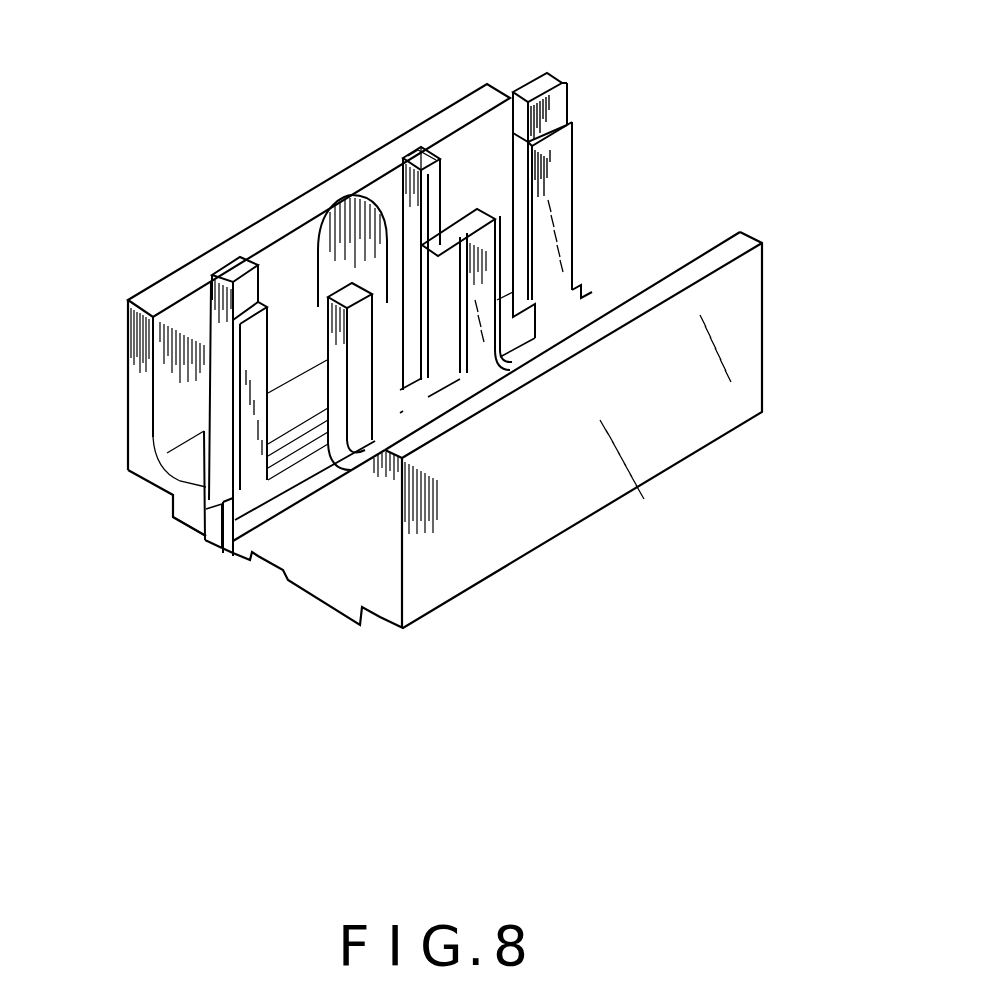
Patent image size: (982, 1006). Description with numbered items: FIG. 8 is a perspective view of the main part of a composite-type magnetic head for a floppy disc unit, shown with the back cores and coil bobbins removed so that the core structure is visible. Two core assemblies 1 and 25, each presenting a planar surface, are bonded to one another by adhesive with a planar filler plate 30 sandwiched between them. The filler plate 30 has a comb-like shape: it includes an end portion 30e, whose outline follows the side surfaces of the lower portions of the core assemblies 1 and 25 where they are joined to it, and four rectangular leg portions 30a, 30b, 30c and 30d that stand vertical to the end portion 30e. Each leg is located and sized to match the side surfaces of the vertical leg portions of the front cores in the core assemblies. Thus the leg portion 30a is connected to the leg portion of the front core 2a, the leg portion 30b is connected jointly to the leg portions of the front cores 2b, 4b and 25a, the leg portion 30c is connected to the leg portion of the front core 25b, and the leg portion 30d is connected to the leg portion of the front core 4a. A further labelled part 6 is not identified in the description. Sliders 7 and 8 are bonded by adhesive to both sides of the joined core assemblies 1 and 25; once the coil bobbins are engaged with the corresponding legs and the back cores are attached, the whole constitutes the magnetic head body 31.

The core assembly 1 is at (215, 528).
The front core 2a is at (552, 106).
The front core 2b is at (428, 150).
The front core 4a is at (235, 272).
The front core 4b is at (407, 142).
The contact tip 6 is at (417, 155).
The slider 7 is at (140, 382).
The slider 8 is at (592, 494).
The core assembly 25 is at (232, 553).
The front core 25a is at (487, 300).
The front core 25b is at (380, 240).
The filler plate 30 is at (212, 532).
The leg portion 30a is at (553, 177).
The leg portion 30b is at (443, 360).
The leg portion 30c is at (335, 298).
The leg portion 30d is at (247, 358).
The end portion 30e is at (306, 462).
The magnetic head body 31 is at (704, 450).